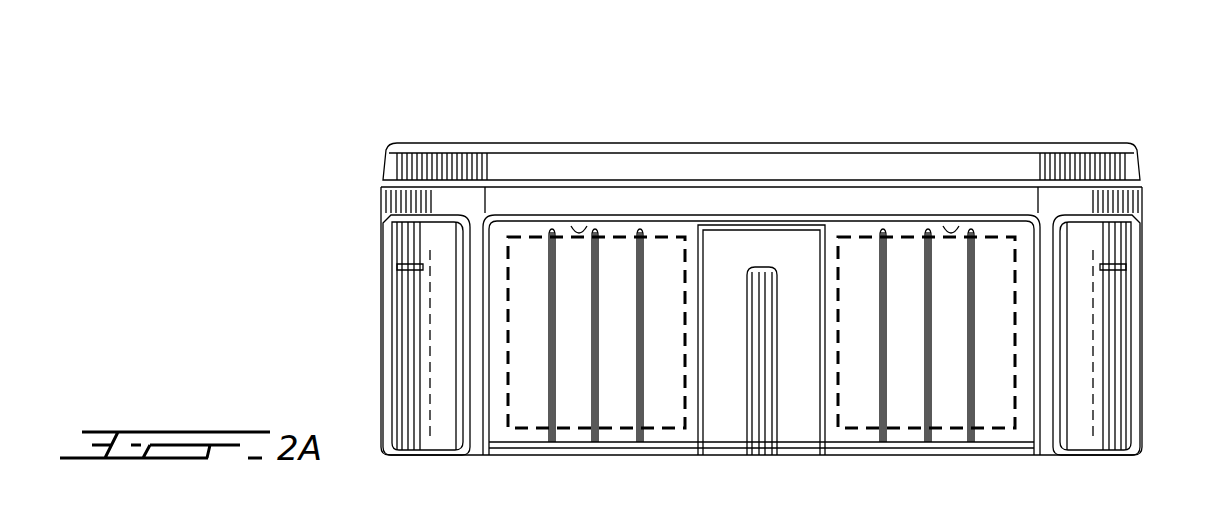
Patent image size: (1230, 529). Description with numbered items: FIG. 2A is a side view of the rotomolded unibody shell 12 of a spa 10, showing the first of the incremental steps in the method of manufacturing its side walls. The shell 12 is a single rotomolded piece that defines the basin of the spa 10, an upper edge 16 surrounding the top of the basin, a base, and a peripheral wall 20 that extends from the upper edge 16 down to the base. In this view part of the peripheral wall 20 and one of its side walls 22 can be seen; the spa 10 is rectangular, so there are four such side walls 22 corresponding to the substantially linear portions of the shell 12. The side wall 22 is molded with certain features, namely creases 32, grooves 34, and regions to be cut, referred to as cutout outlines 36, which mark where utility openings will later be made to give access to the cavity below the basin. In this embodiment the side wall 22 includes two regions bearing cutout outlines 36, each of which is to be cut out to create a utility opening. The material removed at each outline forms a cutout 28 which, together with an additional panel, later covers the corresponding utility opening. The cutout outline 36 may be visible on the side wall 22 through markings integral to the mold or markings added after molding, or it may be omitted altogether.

The spa 10 is at (372, 116).
The rotomolded unibody shell 12 is at (383, 164).
The upper edge 16 is at (523, 162).
The peripheral wall 20 is at (802, 255).
The side wall 22 is at (723, 275).
The cutout 28 is at (622, 378).
The crease 32 is at (552, 385).
The groove 34 is at (593, 226).
The cutout outline 36 is at (651, 432).